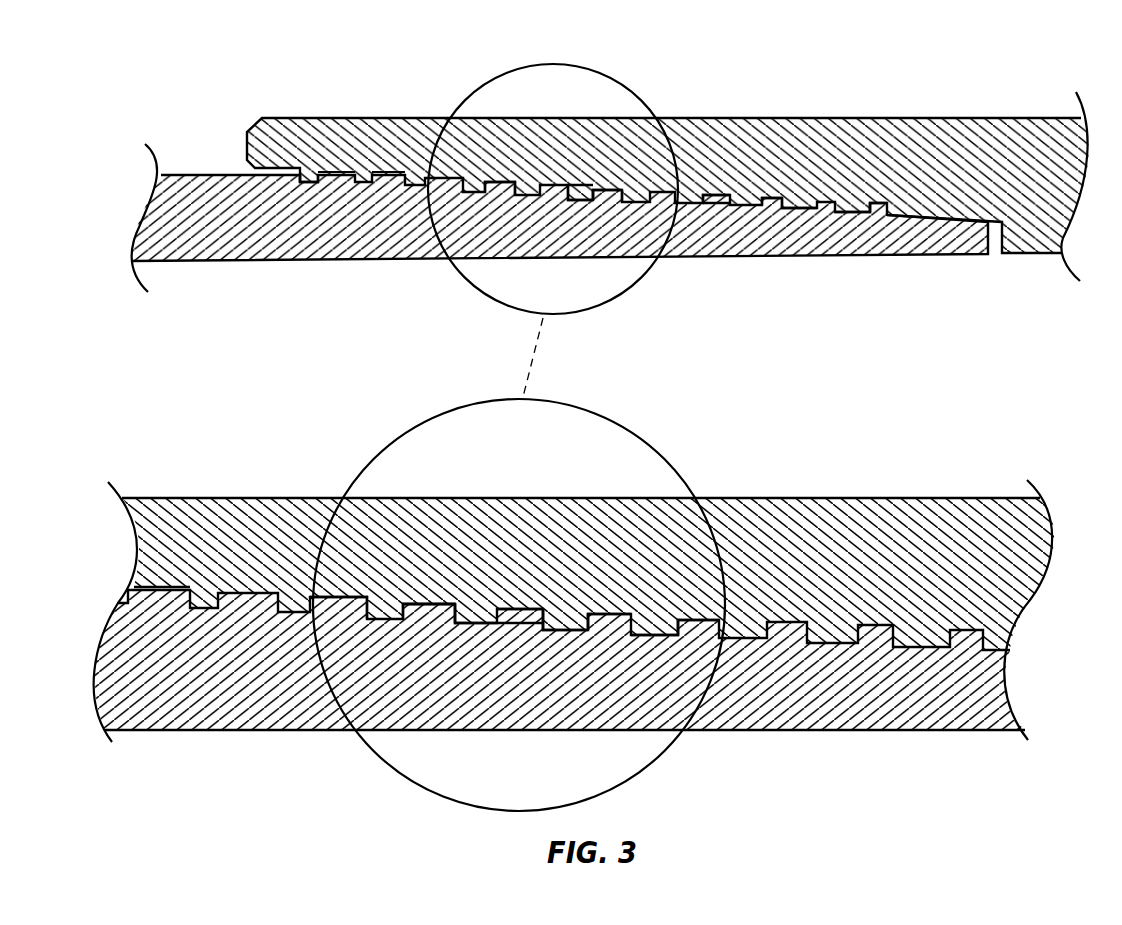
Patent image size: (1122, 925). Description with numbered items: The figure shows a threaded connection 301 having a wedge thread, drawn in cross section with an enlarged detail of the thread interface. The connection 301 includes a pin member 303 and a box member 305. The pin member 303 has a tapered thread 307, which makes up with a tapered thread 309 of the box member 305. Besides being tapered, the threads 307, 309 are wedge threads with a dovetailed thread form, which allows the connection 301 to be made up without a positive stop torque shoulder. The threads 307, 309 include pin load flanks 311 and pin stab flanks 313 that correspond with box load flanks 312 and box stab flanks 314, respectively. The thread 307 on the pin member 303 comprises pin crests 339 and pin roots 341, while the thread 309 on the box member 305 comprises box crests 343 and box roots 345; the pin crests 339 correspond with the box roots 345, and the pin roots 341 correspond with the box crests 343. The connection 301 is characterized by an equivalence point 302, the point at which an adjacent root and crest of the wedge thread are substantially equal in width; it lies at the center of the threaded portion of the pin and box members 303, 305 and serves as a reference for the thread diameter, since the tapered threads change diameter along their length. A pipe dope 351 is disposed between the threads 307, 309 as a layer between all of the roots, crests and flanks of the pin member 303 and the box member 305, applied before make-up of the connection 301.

The threaded connection 301 is at (287, 57).
The equivalence point 302 is at (580, 186).
The pin member 303 is at (197, 244).
The box member 305 is at (960, 160).
The tapered thread 307 is at (880, 214).
The tapered thread 309 is at (853, 203).
The pin load flanks 311 is at (713, 203).
The box load flanks 312 is at (720, 203).
The pin stab flanks 313 is at (772, 206).
The box stab flanks 314 is at (788, 197).
The pin crests 339 is at (610, 185).
The pin roots 341 is at (597, 190).
The box crests 343 is at (580, 188).
The box roots 345 is at (608, 178).
The pipe dope 351 is at (338, 172).